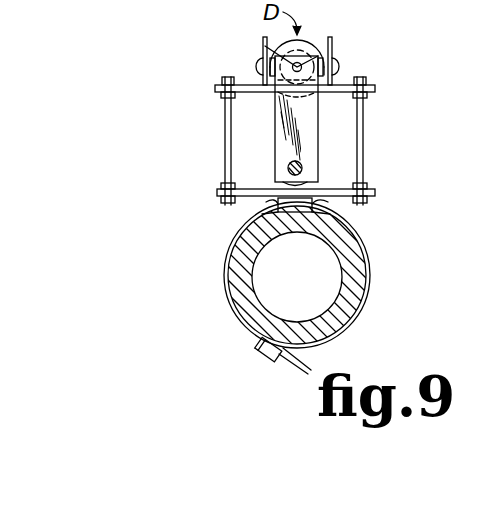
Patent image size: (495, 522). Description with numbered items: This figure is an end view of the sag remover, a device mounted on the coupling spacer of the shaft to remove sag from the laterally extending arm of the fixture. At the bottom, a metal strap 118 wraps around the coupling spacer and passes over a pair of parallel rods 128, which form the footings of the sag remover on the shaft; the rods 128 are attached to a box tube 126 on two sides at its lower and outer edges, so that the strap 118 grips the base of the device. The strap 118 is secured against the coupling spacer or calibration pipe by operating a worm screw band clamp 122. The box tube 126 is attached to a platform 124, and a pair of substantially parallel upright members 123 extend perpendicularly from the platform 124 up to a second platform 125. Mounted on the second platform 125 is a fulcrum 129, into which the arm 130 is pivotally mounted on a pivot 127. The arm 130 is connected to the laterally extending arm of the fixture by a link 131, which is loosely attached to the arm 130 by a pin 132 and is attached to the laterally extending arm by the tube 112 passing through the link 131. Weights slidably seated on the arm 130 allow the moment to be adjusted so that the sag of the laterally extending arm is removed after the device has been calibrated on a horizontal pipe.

The tube 112 is at (289, 162).
The metal strap 118 is at (350, 244).
The worm screw band clamp 122 is at (266, 358).
The upright members 123 is at (224, 170).
The platform 124 is at (340, 203).
The second platform 125 is at (248, 85).
The box tube 126 is at (262, 205).
The pivot 127 is at (338, 70).
The rods 128 is at (309, 214).
The fulcrum 129 is at (332, 50).
The arm 130 is at (317, 46).
The link 131 is at (318, 137).
The pin 132 is at (263, 46).